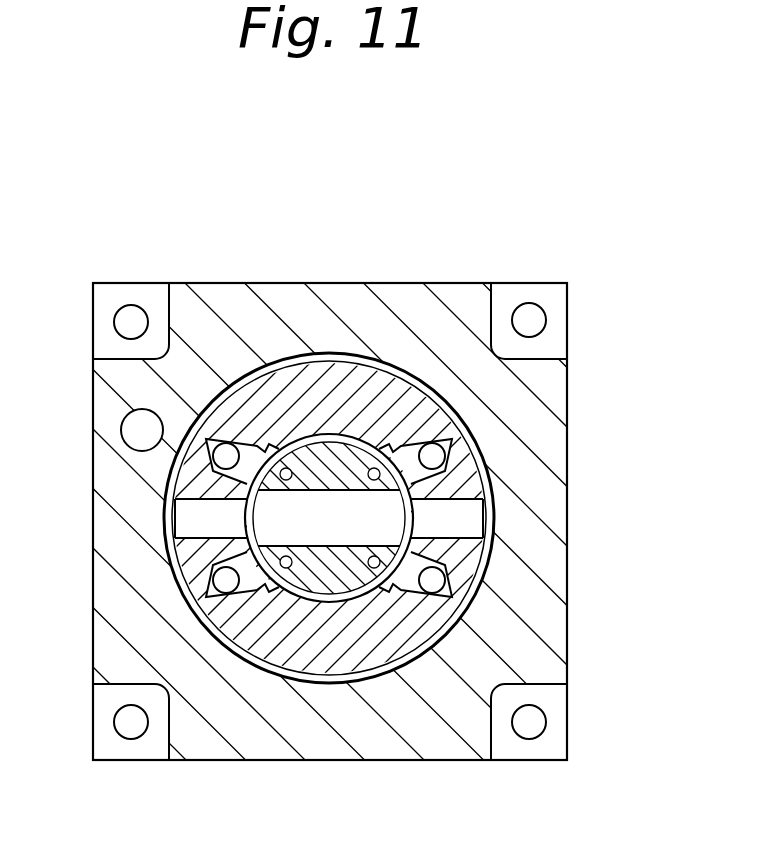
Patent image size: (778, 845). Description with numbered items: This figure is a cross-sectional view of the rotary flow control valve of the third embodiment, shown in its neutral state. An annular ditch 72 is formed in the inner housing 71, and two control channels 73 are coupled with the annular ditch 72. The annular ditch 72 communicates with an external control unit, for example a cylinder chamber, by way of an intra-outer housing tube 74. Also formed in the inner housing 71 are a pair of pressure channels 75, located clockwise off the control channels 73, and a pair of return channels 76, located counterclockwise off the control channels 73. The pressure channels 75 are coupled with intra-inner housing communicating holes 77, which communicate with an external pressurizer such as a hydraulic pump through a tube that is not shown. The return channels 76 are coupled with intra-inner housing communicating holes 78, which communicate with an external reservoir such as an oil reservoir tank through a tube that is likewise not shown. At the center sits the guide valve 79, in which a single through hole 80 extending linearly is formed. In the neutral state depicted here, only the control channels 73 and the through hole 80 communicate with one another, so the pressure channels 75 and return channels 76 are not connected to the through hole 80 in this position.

The inner housing 71 is at (474, 448).
The annular ditch 72 is at (488, 558).
The control channels 73 is at (175, 510).
The intra-outer housing tube 74 is at (122, 432).
The pressure channels 75 is at (248, 446).
The return channels 76 is at (409, 440).
The intra-inner housing communicating holes 77 is at (223, 444).
The intra-inner housing communicating holes 78 is at (428, 443).
The guide valve 79 is at (345, 600).
The through hole 80 is at (325, 497).